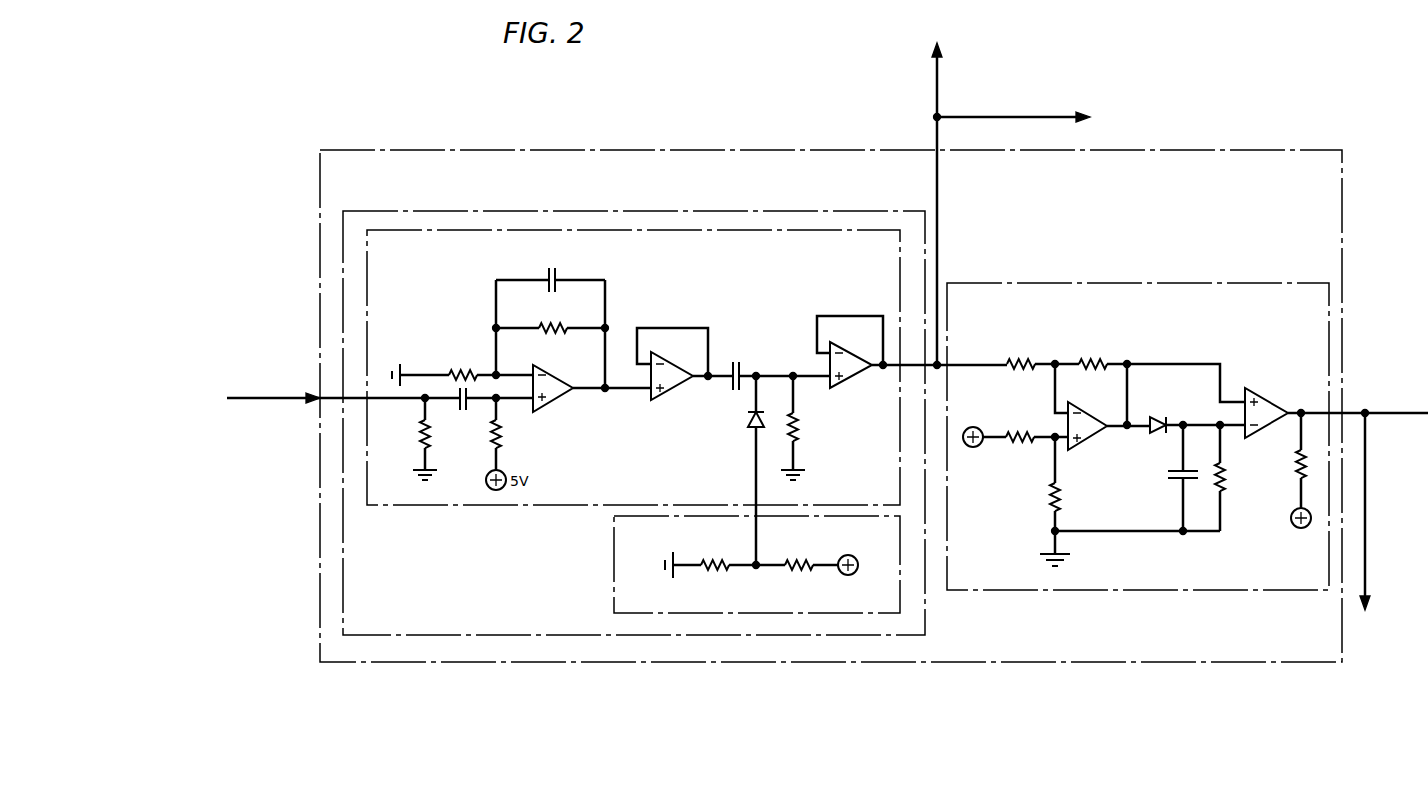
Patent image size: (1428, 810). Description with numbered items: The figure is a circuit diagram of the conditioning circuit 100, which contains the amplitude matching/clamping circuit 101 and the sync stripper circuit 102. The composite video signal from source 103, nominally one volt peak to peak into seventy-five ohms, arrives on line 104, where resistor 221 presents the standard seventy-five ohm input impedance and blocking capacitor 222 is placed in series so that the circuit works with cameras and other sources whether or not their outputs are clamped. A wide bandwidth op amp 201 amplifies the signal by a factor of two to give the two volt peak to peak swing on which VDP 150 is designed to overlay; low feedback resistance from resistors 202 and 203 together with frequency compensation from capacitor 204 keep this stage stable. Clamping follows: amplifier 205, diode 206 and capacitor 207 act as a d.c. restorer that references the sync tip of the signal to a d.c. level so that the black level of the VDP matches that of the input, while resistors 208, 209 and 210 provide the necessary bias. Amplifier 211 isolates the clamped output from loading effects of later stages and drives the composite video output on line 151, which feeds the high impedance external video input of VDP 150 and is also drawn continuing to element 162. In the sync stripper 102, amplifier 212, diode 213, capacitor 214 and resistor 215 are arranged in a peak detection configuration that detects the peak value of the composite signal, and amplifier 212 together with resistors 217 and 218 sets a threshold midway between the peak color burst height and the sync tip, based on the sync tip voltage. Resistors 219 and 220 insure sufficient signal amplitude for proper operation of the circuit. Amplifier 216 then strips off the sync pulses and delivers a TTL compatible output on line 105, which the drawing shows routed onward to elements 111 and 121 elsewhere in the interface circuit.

The conditioning circuit 100 is at (680, 150).
The amplitude matching circuit 101 is at (775, 211).
The sync stripper circuit 102 is at (1147, 283).
The source 103 is at (268, 397).
The line 104 is at (384, 387).
The line 105 is at (1356, 410).
The output to FIG. 3 111 is at (1366, 520).
The output to FIG. 4 121 is at (1400, 411).
The VDP 150 is at (935, 86).
The external video input 151 is at (938, 197).
The output to FIG. 5 162 is at (983, 115).
The op amp 201 is at (545, 412).
The resistor 202 is at (462, 368).
The resistor 203 is at (563, 332).
The capacitor 204 is at (556, 286).
The amplifier 205 is at (665, 400).
The diode 206 is at (750, 420).
The capacitor 207 is at (742, 365).
The resistor 208 is at (715, 577).
The resistor 209 is at (805, 577).
The resistor 210 is at (800, 435).
The amplifier 211 is at (843, 385).
The amplifier 212 is at (1082, 448).
The diode 213 is at (1156, 416).
The capacitor 214 is at (1172, 480).
The resistor 215 is at (1228, 477).
The amplifier 216 is at (1258, 392).
The resistor 217 is at (1013, 425).
The resistor 218 is at (1043, 498).
The resistor 219 is at (1020, 352).
The resistor 220 is at (1093, 352).
The resistor 221 is at (421, 442).
The blocking capacitor 222 is at (467, 411).